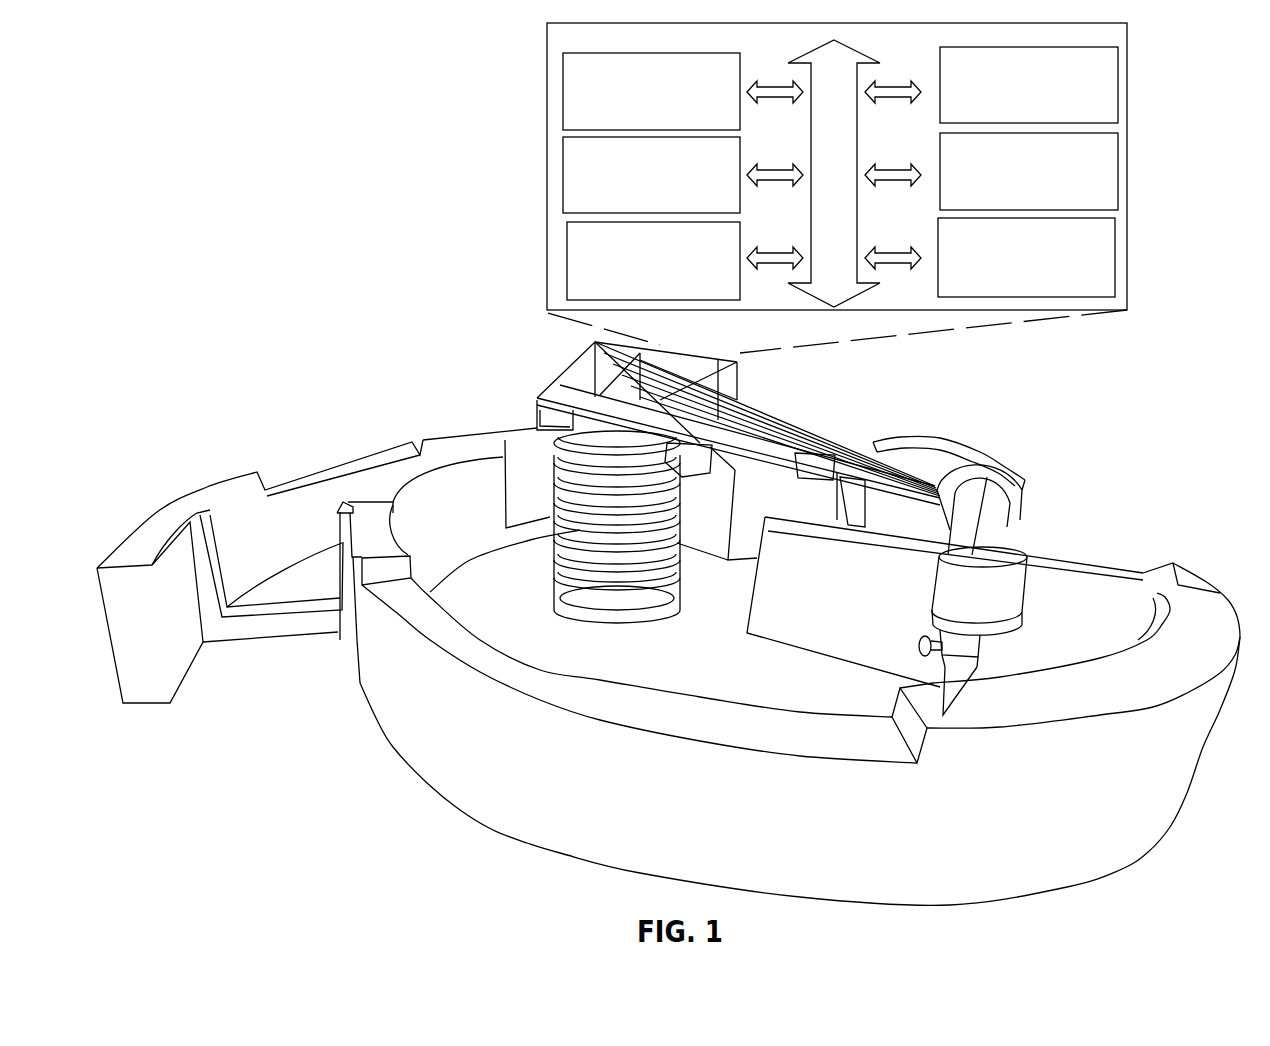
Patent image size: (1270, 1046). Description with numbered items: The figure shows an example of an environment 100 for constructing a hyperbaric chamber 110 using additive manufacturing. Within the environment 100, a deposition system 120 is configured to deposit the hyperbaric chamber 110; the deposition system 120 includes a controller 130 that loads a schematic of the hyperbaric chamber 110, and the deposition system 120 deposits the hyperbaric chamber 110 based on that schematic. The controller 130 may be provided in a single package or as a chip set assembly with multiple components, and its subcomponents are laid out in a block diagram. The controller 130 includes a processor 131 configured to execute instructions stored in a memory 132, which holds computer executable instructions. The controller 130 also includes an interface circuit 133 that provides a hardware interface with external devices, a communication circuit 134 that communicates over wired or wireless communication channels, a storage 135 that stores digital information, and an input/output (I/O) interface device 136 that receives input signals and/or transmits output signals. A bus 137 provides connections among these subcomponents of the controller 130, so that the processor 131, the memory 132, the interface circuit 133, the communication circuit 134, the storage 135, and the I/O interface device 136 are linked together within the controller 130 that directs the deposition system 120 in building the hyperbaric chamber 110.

The environment 100 is at (213, 72).
The hyperbaric chamber 110 is at (227, 475).
The deposition system 120 is at (538, 400).
The controller 130 is at (547, 212).
The processor 131 is at (651, 91).
The memory 132 is at (651, 175).
The interface circuit 133 is at (653, 261).
The communication circuit 134 is at (1029, 85).
The storage 135 is at (1029, 171).
The input/output (I/O) interface device 136 is at (1026, 257).
The bus 137 is at (834, 173).